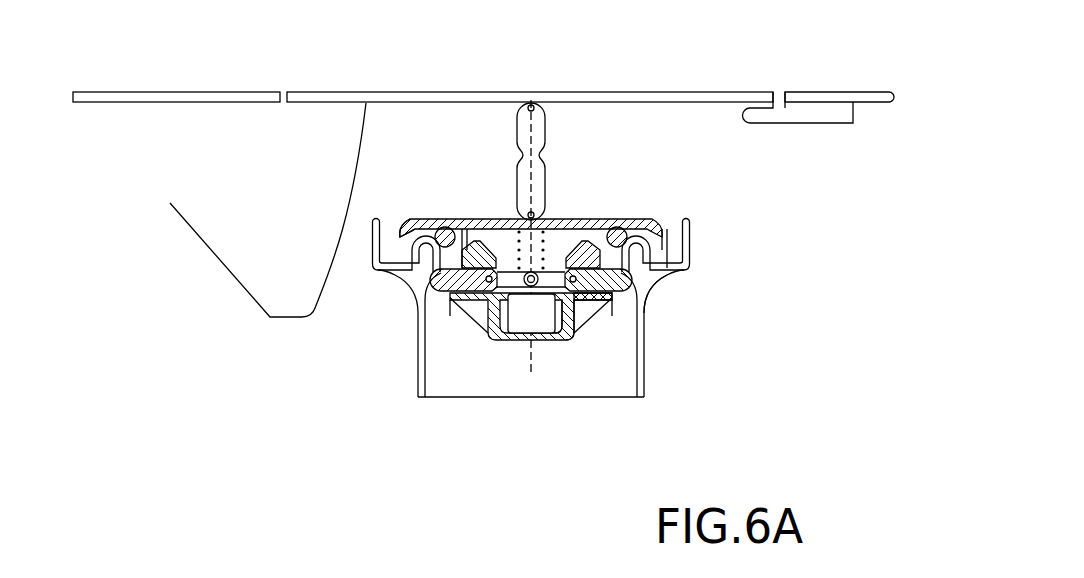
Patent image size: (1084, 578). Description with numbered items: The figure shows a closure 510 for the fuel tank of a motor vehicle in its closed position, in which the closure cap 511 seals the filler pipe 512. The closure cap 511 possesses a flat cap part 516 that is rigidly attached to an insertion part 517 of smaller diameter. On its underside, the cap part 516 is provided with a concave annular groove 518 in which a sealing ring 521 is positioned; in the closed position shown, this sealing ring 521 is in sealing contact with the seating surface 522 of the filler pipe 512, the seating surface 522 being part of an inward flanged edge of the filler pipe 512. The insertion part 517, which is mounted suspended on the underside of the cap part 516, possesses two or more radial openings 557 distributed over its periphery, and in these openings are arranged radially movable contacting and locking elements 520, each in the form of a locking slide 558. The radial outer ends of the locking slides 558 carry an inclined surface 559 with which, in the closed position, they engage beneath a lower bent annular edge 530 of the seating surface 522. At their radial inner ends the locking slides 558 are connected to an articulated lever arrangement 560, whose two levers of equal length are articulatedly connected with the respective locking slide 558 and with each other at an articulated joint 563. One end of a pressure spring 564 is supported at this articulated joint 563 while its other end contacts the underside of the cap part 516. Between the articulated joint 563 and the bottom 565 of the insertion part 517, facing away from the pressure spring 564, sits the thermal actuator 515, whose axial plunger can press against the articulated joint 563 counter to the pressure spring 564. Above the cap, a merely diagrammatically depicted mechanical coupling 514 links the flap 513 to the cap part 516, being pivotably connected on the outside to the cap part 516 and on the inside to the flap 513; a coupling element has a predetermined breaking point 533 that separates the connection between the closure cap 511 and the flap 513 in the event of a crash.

The closure 510 is at (340, 437).
The closure cap 511 is at (618, 122).
The filler pipe 512 is at (644, 357).
The flap 513 is at (398, 91).
The mechanical coupling 514 is at (513, 137).
The thermal actuator 515 is at (518, 341).
The cap part 516 is at (594, 220).
The insertion part 517 is at (573, 340).
The concave annular groove 518 is at (452, 220).
The contacting and locking elements 520 is at (635, 295).
The sealing ring 521 is at (443, 229).
The seating surface 522 is at (633, 224).
The lower bent annular edge 530 is at (686, 277).
The predetermined breaking point 533 is at (542, 159).
The radial openings 557 is at (607, 300).
The locking slide 558 is at (447, 283).
The inclined surface 559 is at (398, 277).
The articulated lever arrangement 560 is at (556, 258).
The articulated joint 563 is at (545, 290).
The pressure spring 564 is at (516, 237).
The bottom 565 is at (524, 334).